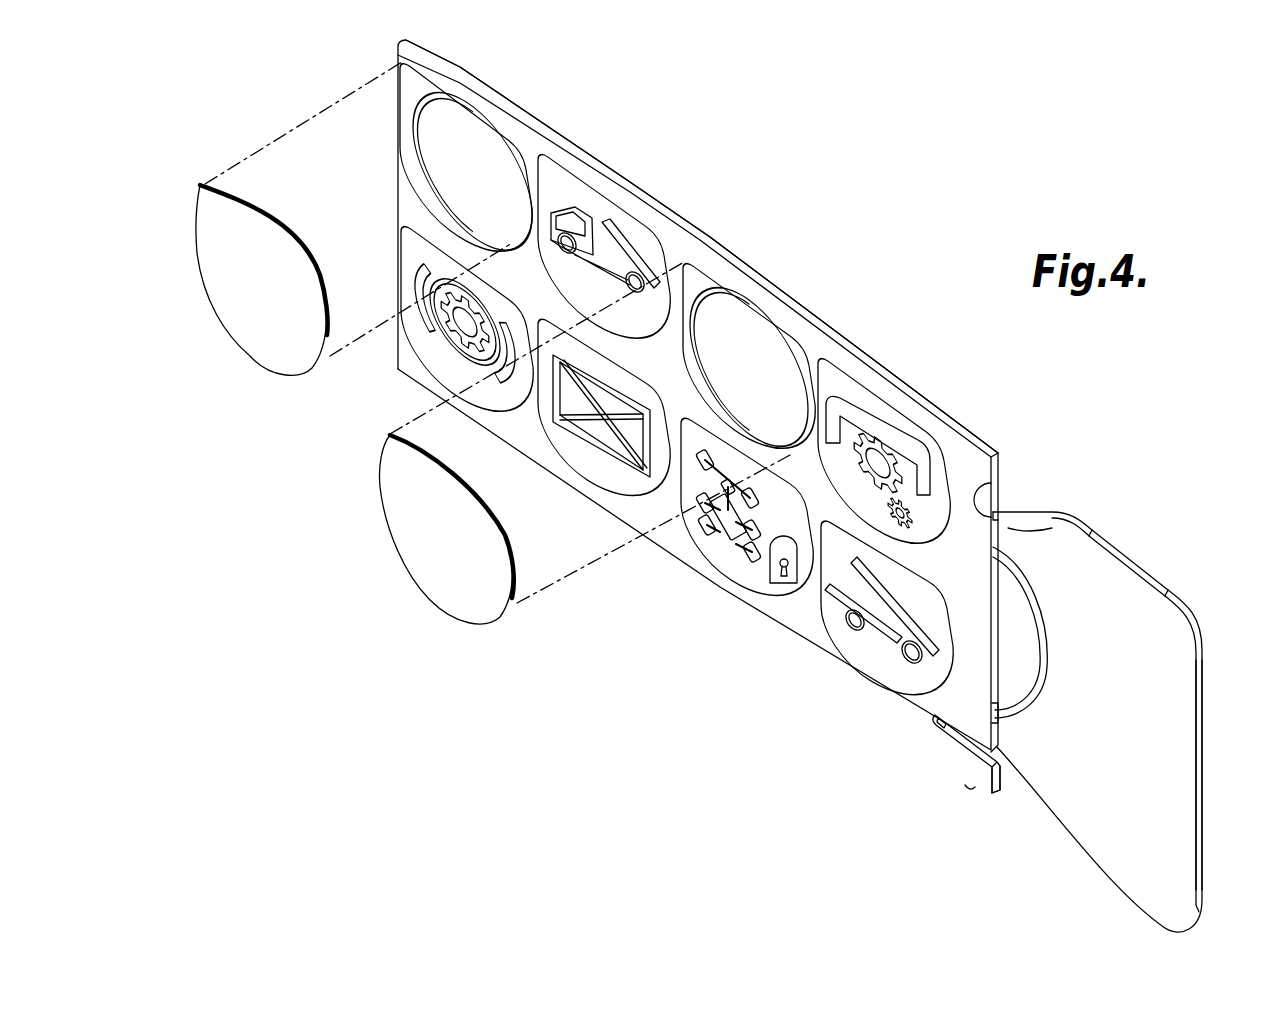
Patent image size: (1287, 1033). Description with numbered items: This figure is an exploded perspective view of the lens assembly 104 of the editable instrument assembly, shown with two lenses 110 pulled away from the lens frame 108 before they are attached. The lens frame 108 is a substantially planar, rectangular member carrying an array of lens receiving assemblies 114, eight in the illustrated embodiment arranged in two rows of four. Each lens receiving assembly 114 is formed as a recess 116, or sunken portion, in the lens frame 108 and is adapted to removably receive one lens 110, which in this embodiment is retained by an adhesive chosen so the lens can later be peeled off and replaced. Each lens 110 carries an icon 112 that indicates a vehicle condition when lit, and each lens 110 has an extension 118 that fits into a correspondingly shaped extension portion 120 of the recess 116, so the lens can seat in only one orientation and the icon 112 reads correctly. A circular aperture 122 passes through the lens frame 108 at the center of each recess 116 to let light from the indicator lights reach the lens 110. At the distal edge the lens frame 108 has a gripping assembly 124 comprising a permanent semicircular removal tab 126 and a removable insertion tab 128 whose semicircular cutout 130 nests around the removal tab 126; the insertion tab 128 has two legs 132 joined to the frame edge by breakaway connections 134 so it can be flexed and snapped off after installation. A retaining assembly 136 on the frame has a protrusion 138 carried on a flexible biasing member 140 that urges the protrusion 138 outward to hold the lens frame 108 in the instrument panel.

The lens assembly 104 is at (812, 184).
The lens frame 108 is at (783, 290).
The lens 110 is at (231, 317).
The icon 112 is at (617, 463).
The lens receiving assembly 114 is at (815, 352).
The recess 116 is at (712, 280).
The extension 118 is at (201, 190).
The extension portion 120 is at (403, 90).
The aperture 122 is at (426, 108).
The gripping assembly 124 is at (1145, 525).
The removal tab 126 is at (1008, 618).
The insertion tab 128 is at (1157, 665).
The semicircular cutout 130 is at (1010, 706).
The leg 132 is at (1052, 512).
The breakaway connection 134 is at (1003, 482).
The retaining assembly 136 is at (868, 766).
The protrusion 138 is at (982, 789).
The biasing member 140 is at (973, 768).